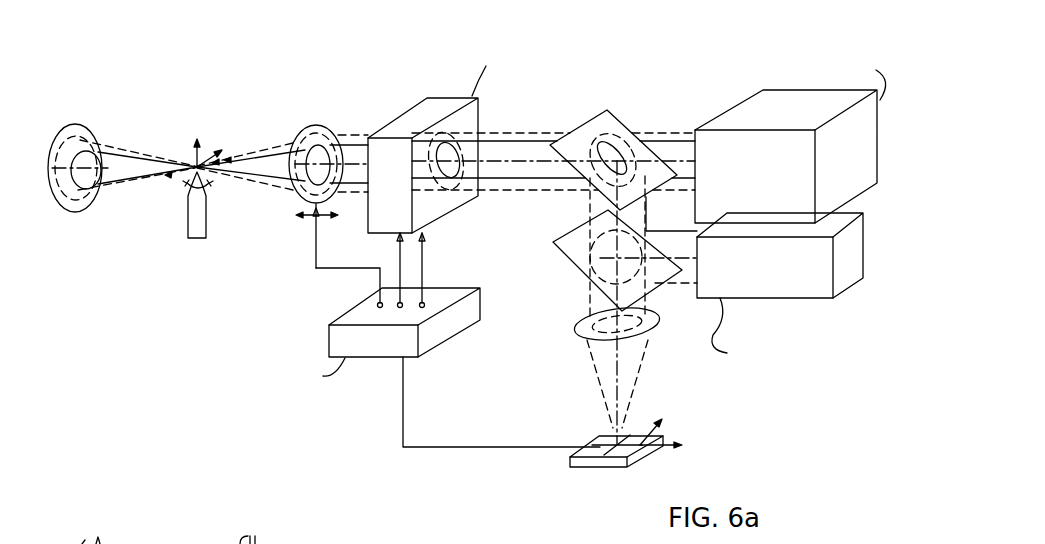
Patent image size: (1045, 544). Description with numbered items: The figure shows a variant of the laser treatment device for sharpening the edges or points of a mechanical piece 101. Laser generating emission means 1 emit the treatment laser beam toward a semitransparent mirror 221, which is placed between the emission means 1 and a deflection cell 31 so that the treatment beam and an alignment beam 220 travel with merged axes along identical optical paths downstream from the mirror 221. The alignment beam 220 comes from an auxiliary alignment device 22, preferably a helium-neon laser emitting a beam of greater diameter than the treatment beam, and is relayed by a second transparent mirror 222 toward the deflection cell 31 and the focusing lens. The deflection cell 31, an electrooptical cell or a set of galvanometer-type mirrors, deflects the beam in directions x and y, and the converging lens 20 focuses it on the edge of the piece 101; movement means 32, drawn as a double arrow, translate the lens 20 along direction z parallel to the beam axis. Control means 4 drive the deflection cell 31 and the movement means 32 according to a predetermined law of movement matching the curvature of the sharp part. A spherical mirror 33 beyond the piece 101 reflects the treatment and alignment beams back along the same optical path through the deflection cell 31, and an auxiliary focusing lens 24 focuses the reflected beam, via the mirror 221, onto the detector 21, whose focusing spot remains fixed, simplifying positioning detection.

The emission means 1 is at (757, 105).
The control means 4 is at (433, 338).
The converging lens 20 is at (313, 128).
The detector 21 is at (600, 440).
The auxiliary alignment device 22 is at (772, 298).
The auxiliary focusing lens 24 is at (590, 338).
The deflection cell 31 is at (430, 107).
The movement means 32 is at (312, 236).
The spherical mirror 33 is at (88, 131).
The mechanical piece 101 is at (202, 165).
The alignment beam 220 is at (671, 215).
The semitransparent mirror 221 is at (611, 166).
The second transparent mirror 222 is at (621, 260).